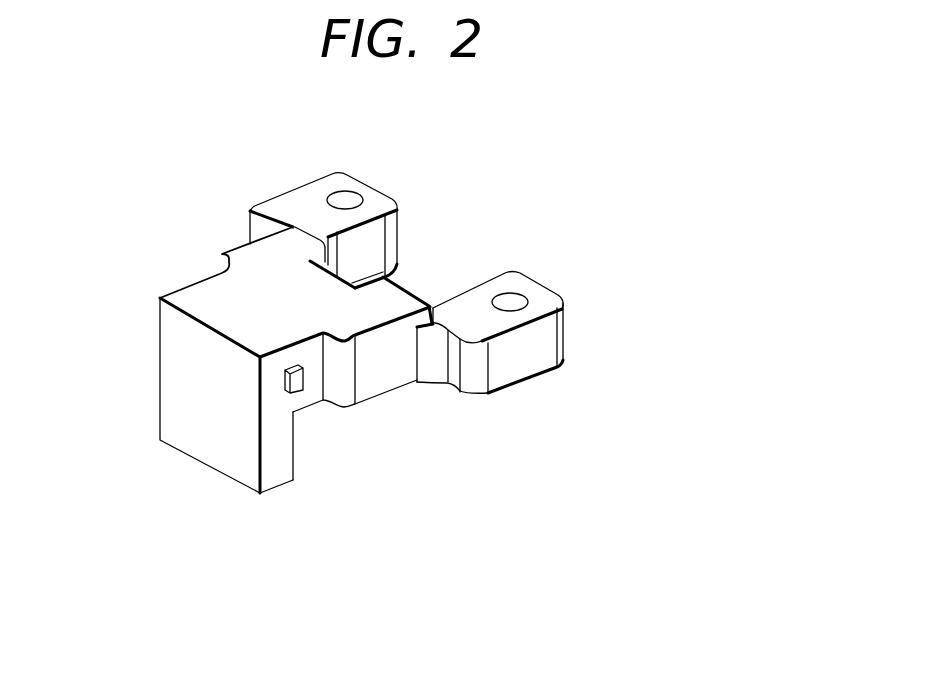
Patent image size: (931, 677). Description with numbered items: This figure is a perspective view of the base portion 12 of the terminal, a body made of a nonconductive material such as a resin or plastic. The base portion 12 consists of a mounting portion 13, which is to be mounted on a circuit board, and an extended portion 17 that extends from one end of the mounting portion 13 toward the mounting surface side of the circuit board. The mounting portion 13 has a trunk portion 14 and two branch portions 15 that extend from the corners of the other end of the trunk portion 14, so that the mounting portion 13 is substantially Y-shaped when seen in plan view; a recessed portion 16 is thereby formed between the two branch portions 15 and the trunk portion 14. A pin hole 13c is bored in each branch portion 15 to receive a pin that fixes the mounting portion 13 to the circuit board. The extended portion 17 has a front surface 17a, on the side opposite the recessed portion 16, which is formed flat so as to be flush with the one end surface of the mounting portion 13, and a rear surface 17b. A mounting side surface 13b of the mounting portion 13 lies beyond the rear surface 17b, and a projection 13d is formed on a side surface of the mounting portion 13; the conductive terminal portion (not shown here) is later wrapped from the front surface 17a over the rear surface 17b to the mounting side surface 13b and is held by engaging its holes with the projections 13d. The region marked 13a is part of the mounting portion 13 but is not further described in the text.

The base portion 12 is at (386, 157).
The mounting portion 13 is at (605, 392).
The main body block 13a is at (272, 263).
The mounting side surface 13b is at (363, 400).
The pin hole 13c is at (348, 199).
The projection 13d is at (285, 380).
The trunk portion 14 is at (377, 375).
The branch portion 15 is at (302, 206).
The recessed portion 16 is at (417, 280).
The extended portion 17 is at (297, 470).
The front surface 17a is at (205, 426).
The rear surface 17b is at (288, 443).